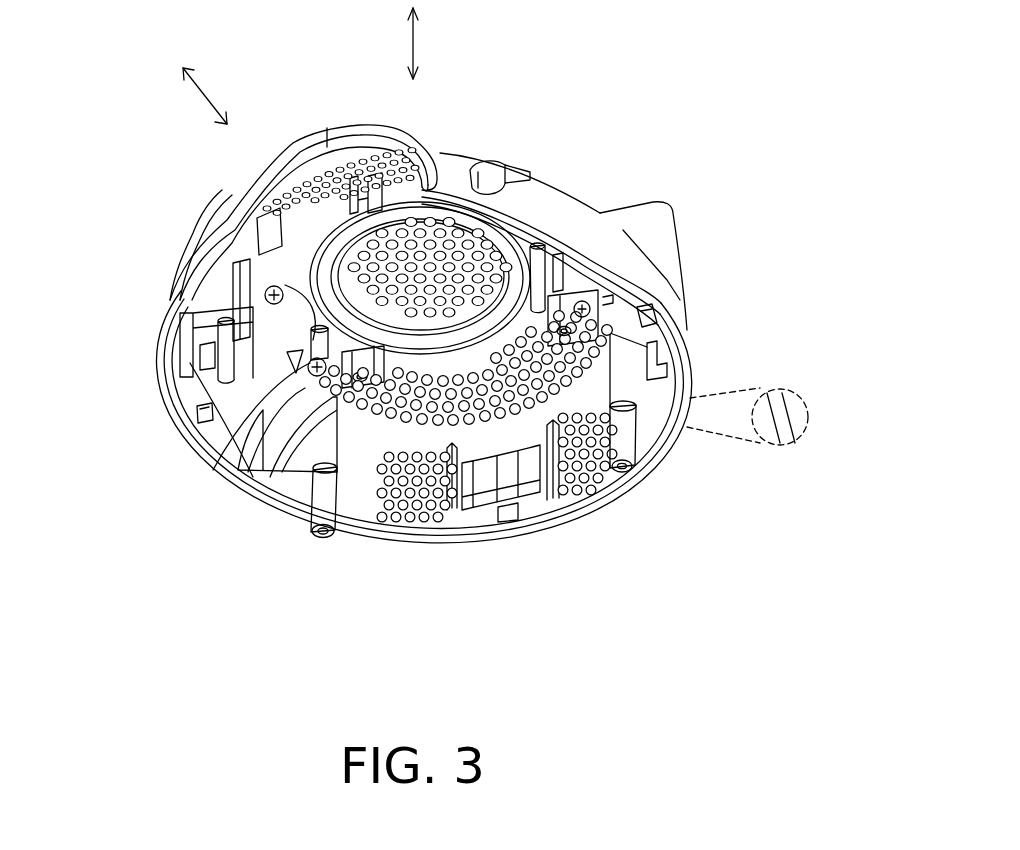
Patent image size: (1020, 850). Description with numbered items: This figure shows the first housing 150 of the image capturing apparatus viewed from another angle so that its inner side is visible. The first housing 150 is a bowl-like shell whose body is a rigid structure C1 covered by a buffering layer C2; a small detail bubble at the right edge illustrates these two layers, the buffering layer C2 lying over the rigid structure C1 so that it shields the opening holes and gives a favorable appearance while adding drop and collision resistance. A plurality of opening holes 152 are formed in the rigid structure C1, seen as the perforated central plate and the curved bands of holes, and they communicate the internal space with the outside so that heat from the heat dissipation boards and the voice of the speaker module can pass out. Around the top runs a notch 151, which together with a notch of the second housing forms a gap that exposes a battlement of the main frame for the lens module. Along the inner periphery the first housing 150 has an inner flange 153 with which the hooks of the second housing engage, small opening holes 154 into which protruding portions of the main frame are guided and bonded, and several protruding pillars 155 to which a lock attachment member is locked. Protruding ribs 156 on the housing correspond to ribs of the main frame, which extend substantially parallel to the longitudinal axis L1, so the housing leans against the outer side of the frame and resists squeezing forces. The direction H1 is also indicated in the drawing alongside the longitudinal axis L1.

The first housing 150 is at (743, 133).
The notch 151 is at (271, 166).
The opening holes 152 is at (510, 242).
The inner flange 153 is at (290, 503).
The opening holes 154 is at (204, 414).
The protruding pillars 155 is at (538, 265).
The protruding ribs 156 is at (255, 462).
The rigid structure C1 is at (772, 393).
The buffering layer C2 is at (787, 393).
The height direction H1 is at (210, 90).
The longitudinal axis L1 is at (429, 43).